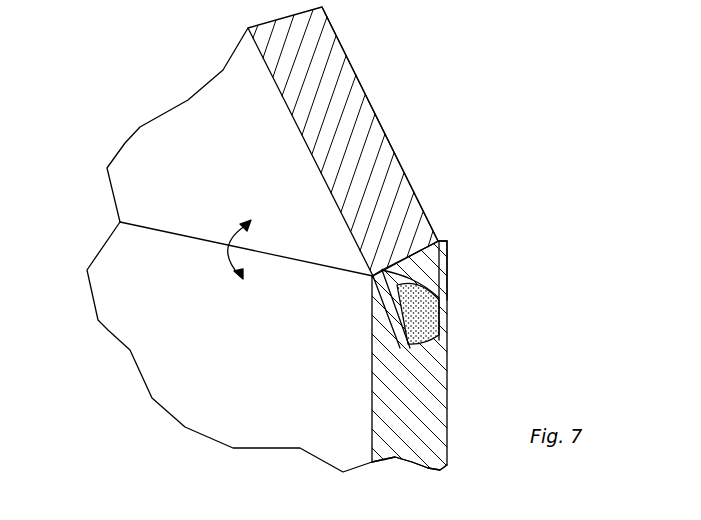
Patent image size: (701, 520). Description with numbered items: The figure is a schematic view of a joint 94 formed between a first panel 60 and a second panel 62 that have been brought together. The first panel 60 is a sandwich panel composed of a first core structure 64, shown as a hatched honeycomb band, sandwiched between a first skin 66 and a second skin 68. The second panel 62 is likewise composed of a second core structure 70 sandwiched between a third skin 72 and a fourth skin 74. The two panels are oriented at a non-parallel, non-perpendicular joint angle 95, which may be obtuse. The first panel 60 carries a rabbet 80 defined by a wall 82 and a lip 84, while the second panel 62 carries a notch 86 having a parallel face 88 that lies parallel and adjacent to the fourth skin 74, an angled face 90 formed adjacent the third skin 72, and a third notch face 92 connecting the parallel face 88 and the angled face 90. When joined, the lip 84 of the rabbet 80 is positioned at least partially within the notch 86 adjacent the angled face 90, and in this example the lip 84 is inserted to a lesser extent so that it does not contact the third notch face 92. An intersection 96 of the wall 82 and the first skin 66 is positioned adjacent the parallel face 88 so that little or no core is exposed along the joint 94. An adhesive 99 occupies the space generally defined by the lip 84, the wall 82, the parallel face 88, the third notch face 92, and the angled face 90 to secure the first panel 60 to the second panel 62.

The first panel 60 is at (170, 155).
The second panel 62 is at (123, 298).
The first core structure 64 is at (385, 180).
The first skin 66 is at (373, 112).
The second skin 68 is at (230, 193).
The second core structure 70 is at (423, 438).
The third skin 72 is at (247, 379).
The fourth skin 74 is at (449, 368).
The rabbet 80 is at (412, 240).
The wall 82 is at (442, 252).
The lip 84 is at (395, 286).
The notch 86 is at (423, 286).
The parallel face 88 is at (441, 278).
The angled face 90 is at (390, 368).
The third notch face 92 is at (439, 322).
The joint 94 is at (497, 258).
The joint angle 95 is at (228, 250).
The intersection 96 is at (441, 243).
The adhesive 99 is at (390, 333).